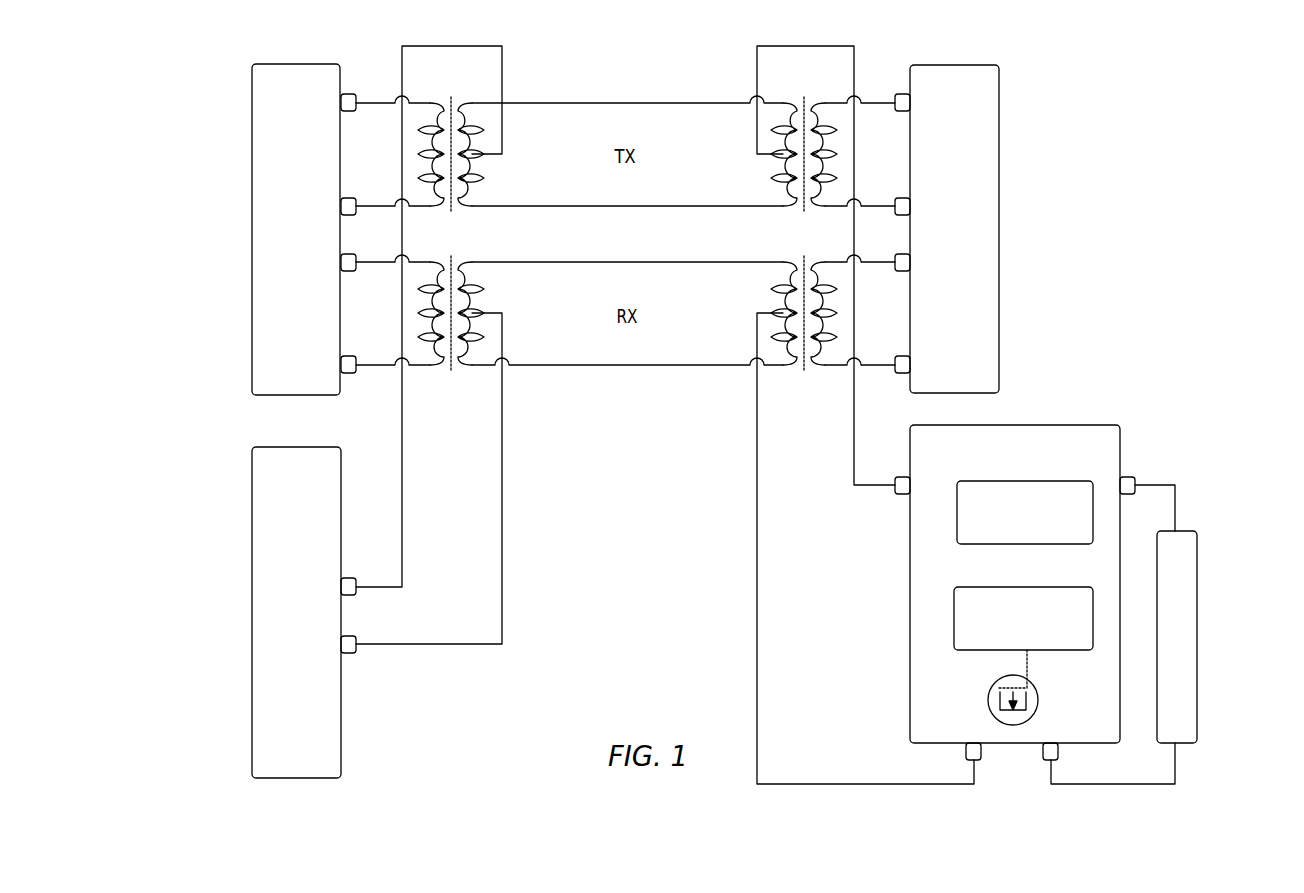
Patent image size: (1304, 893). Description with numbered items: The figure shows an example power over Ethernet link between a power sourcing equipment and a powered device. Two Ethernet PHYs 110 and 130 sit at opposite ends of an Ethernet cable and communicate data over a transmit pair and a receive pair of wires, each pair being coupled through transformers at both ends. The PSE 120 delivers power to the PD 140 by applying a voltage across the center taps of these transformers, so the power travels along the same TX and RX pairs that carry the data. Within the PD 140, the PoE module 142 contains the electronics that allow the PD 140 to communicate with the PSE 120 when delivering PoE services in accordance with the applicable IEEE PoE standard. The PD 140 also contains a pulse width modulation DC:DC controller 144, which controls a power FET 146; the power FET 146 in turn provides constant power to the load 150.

The Ethernet PHY 110 is at (252, 233).
The power sourcing equipment (PSE) 120 is at (252, 615).
The Ethernet PHY 130 is at (999, 229).
The powered device (PD) 140 is at (910, 588).
The PoE module 142 is at (995, 481).
The pulse width modulation (PWM) DC:DC controller 144 is at (965, 587).
The power FET 146 is at (990, 698).
The load 150 is at (1197, 590).